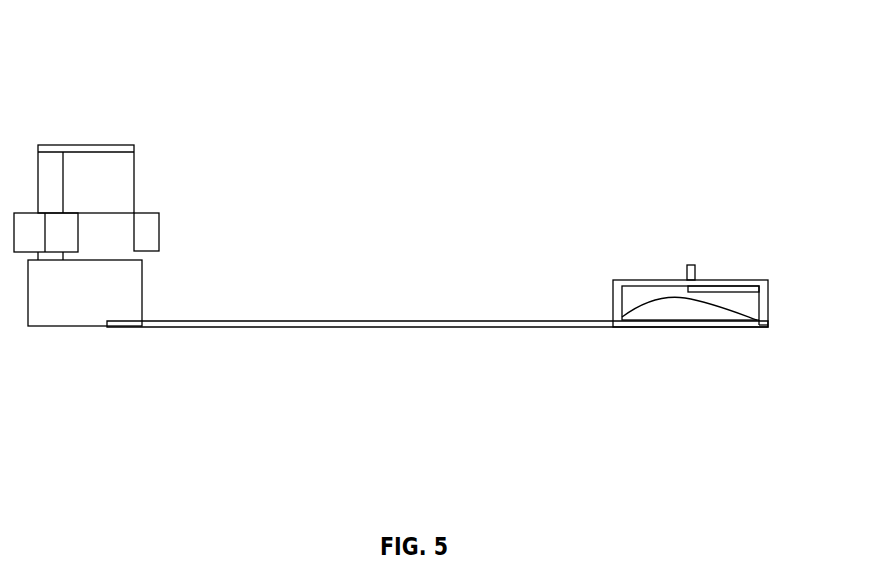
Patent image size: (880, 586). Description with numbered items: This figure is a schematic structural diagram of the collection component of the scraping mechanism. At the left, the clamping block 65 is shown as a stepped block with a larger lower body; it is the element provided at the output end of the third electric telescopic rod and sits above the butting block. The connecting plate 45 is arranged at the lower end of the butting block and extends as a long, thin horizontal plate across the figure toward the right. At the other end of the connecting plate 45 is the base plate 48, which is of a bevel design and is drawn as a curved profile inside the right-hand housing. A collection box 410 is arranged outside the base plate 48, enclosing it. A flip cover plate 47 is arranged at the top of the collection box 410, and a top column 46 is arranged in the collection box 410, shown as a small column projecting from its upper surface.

The clamping block 65 is at (41, 213).
The connecting plate 45 is at (327, 322).
The top column 46 is at (692, 265).
The flip cover plate 47 is at (710, 280).
The base plate 48 is at (622, 318).
The collection box 410 is at (615, 285).